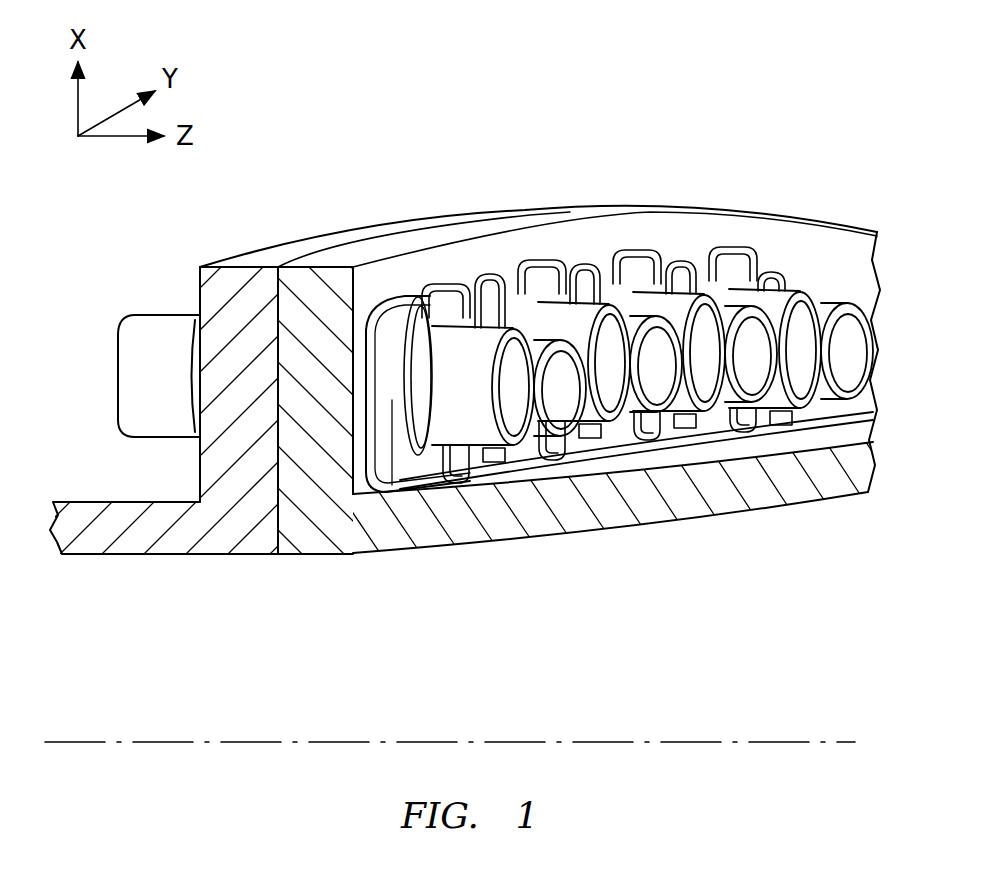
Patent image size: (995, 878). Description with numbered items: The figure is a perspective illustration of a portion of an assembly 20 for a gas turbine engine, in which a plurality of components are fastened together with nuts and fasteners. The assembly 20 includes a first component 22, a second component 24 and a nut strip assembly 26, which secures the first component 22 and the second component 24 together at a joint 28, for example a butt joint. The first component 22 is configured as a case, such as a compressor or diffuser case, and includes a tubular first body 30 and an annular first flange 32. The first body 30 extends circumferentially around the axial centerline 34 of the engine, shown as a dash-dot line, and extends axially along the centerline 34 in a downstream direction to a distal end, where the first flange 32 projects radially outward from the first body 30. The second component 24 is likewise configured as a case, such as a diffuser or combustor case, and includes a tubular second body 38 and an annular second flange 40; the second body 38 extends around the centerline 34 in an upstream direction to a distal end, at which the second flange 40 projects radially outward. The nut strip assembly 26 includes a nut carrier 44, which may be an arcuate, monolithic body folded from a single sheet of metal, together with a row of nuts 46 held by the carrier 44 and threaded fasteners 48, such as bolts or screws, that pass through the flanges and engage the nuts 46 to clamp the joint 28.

The assembly 20 is at (667, 98).
The first component 22 is at (138, 564).
The second component 24 is at (752, 521).
The nut strip assembly 26 is at (637, 243).
The joint 28 is at (283, 564).
The first body 30 is at (186, 555).
The first flange 32 is at (272, 255).
The axial centerline 34 is at (848, 742).
The second body 38 is at (633, 530).
The second flange 40 is at (373, 247).
The nut carrier 44 is at (730, 245).
The nut 46 is at (782, 283).
The threaded fastener 48 is at (115, 380).